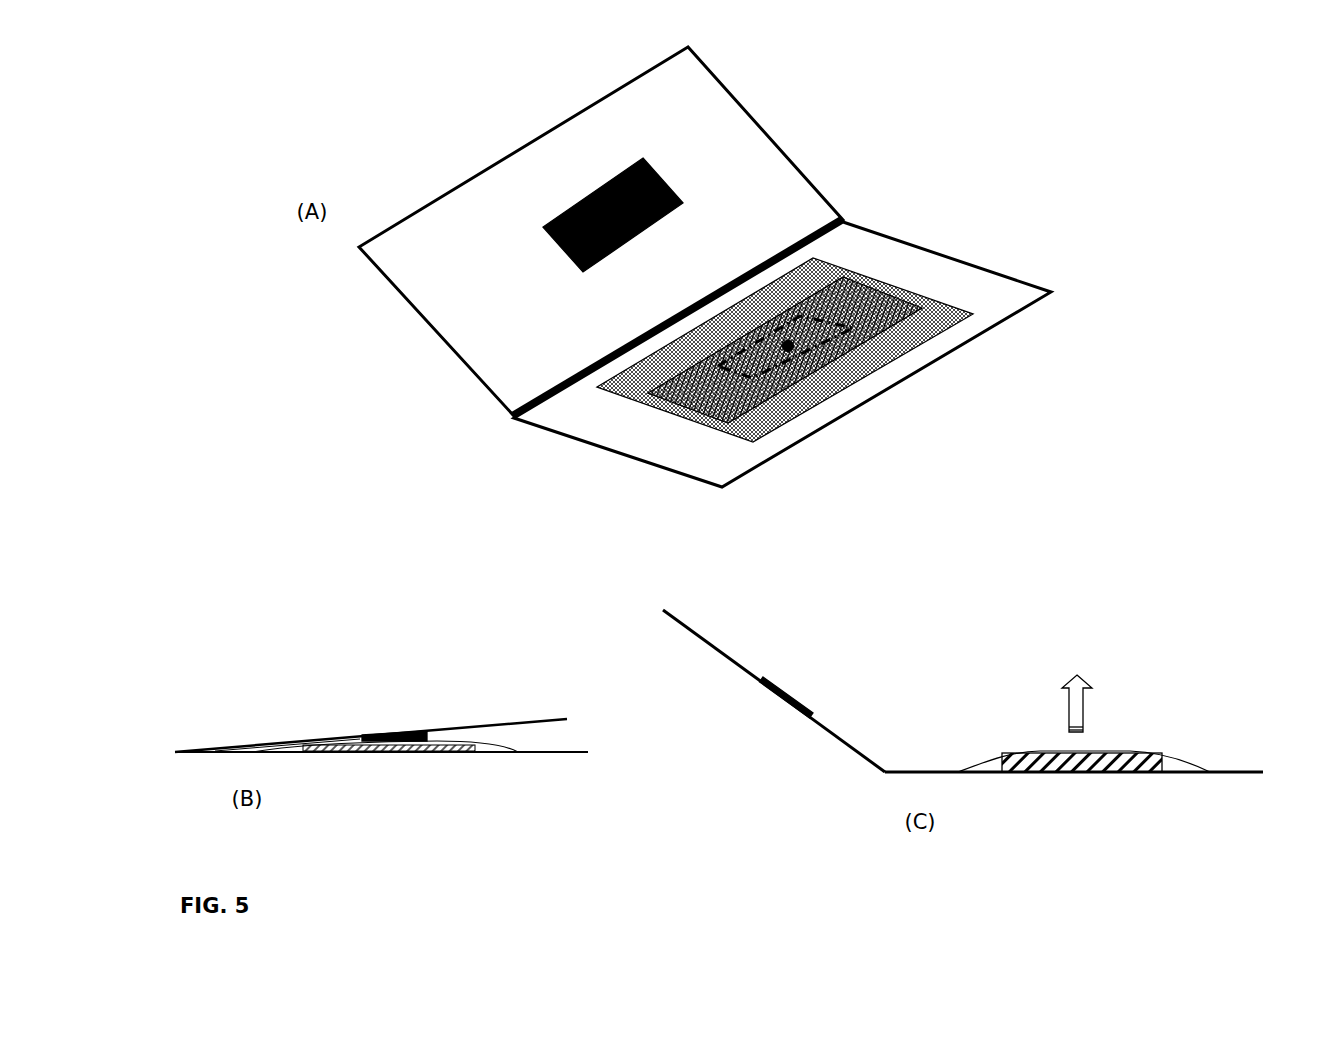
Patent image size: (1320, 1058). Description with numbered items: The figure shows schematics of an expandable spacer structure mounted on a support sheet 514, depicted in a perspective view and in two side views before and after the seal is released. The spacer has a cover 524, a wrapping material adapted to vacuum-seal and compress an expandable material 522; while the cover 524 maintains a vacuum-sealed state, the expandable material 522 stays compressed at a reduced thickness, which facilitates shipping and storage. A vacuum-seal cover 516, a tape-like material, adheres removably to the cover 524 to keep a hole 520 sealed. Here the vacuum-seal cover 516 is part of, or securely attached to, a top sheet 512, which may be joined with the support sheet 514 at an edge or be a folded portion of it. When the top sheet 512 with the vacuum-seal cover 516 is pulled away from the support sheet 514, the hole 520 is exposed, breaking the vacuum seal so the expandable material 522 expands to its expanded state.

The top sheet 512 is at (797, 174).
The support sheet 514 is at (977, 271).
The vacuum-seal cover 516 is at (660, 174).
The hole 520 is at (788, 346).
The expandable material 522 is at (773, 393).
The cover 524 is at (912, 340).